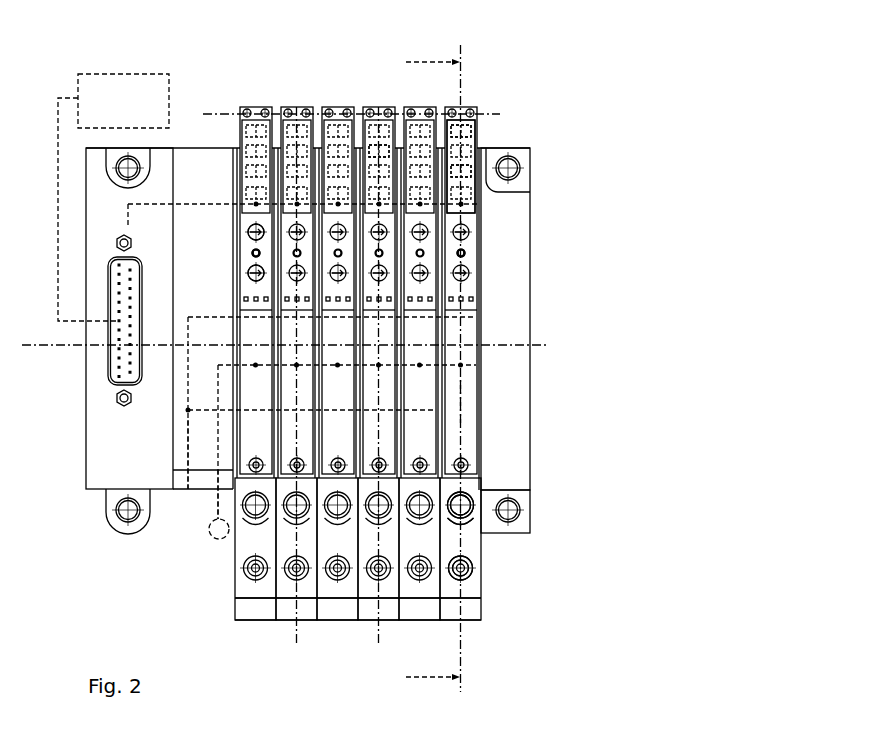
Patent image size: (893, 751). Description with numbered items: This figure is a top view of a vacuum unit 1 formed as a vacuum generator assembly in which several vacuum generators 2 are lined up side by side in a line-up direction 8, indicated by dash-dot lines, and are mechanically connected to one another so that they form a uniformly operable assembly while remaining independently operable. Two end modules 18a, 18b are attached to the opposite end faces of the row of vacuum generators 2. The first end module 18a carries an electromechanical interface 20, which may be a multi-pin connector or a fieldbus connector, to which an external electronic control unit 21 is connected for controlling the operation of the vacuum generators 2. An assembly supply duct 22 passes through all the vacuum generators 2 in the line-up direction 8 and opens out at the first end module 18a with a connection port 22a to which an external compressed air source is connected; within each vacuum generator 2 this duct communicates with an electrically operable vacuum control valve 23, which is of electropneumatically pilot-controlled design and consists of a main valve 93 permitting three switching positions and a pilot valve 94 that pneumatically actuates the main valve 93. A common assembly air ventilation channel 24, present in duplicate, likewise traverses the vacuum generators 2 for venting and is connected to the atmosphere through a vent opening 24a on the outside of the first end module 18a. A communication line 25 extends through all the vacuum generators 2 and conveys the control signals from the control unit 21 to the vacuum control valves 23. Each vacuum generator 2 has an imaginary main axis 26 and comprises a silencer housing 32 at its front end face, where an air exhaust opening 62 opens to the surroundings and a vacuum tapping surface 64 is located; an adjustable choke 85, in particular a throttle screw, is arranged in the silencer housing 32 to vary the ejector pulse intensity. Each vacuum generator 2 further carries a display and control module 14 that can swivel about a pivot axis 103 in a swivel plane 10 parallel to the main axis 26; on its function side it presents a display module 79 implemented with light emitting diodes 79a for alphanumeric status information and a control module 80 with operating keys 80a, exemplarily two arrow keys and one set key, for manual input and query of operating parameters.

The vacuum unit 1 is at (215, 97).
The vacuum generator 2 is at (368, 94).
The line-up direction 8 is at (549, 343).
The swivel plane 10 is at (462, 83).
The display and control module 14 is at (470, 134).
The first end module 18a is at (103, 452).
The second end module 18b is at (513, 473).
The electromechanical interface 20 is at (118, 368).
The electronic control unit 21 is at (113, 197).
The assembly supply duct 22 is at (412, 368).
The connection port 22a is at (215, 492).
The vacuum control valve 23 is at (470, 402).
The assembly air ventilation channel 24 is at (412, 316).
The vent opening 24a is at (188, 489).
The communication line 25 is at (203, 203).
The main axis 26 is at (379, 108).
The silencer housing 32 is at (432, 542).
The air exhaust opening 62 is at (472, 577).
The vacuum tapping surface 64 is at (248, 626).
The display module 79 is at (468, 158).
The light emitting diodes 79a is at (458, 131).
The control module 80 is at (470, 258).
The operating keys 80a is at (248, 272).
The choke 85 is at (474, 513).
The main valve 93 is at (470, 358).
The pilot valve 94 is at (480, 209).
The pivot axis 103 is at (225, 112).